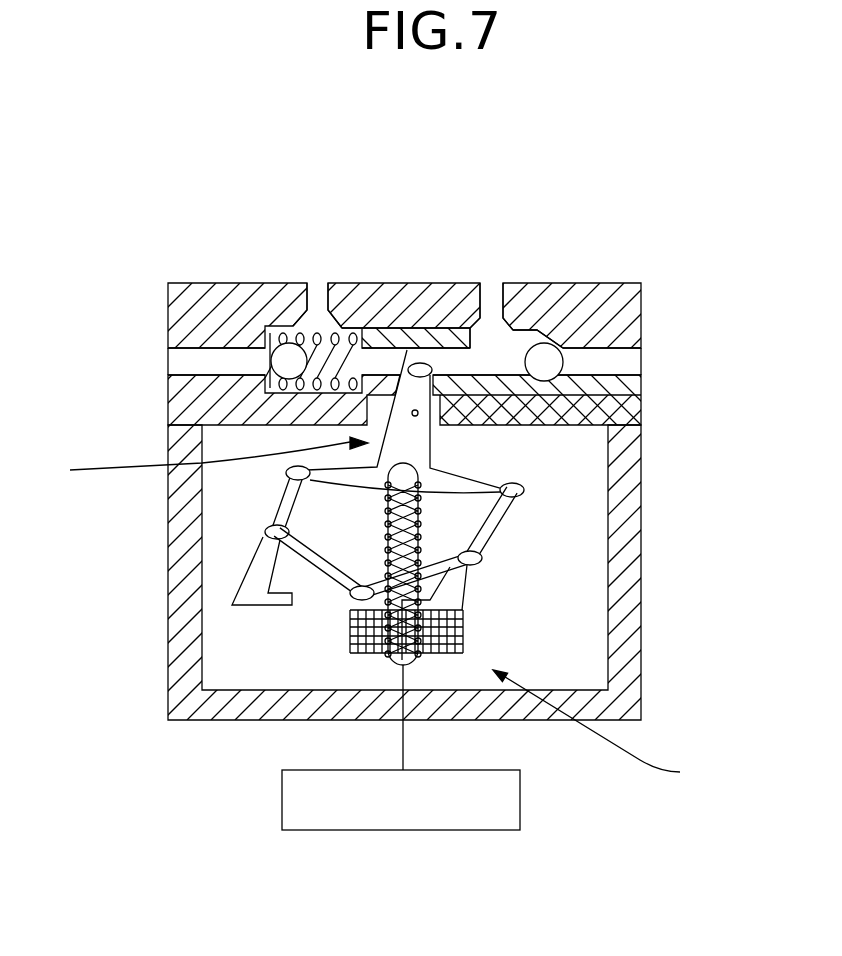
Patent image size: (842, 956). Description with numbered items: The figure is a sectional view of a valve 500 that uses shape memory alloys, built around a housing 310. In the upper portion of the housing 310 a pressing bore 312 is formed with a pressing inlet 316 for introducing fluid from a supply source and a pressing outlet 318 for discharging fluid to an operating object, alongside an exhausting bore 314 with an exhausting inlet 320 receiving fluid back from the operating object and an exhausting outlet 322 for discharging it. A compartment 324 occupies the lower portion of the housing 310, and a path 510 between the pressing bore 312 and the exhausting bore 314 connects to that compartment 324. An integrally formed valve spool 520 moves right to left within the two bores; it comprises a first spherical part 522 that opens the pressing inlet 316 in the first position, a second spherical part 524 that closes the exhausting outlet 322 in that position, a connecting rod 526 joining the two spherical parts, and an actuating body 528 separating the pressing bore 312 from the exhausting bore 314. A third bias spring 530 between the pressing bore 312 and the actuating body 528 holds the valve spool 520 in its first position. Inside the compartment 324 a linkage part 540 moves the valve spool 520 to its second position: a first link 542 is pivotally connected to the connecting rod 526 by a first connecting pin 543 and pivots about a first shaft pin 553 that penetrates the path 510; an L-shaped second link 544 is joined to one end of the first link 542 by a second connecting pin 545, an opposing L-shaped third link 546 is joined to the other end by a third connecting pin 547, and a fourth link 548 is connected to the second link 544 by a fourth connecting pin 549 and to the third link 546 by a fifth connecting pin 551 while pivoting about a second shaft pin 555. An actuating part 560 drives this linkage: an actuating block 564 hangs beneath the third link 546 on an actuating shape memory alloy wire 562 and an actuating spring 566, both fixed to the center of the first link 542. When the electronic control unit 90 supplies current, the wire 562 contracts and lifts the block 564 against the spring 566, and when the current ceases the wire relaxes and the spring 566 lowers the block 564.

The valve 500 is at (590, 188).
The housing 310 is at (642, 323).
The pressing bore 312 is at (304, 325).
The exhausting bore 314 is at (512, 330).
The pressing inlet 316 is at (308, 292).
The pressing outlet 318 is at (181, 358).
The exhausting inlet 320 is at (488, 300).
The exhausting outlet 322 is at (633, 365).
The compartment 324 is at (165, 714).
The path 510 is at (430, 345).
The valve spool 520 is at (371, 362).
The first spherical part 522 is at (255, 386).
The second spherical part 524 is at (553, 372).
The connecting rod 526 is at (530, 312).
The actuating body 528 is at (407, 350).
The third bias spring 530 is at (262, 370).
The linkage part 540 is at (186, 458).
The first link 542 is at (524, 496).
The first connecting pin 543 is at (413, 442).
The second link 544 is at (232, 603).
The second connecting pin 545 is at (287, 470).
The third link 546 is at (487, 530).
The third connecting pin 547 is at (503, 503).
The fourth link 548 is at (230, 678).
The fourth connecting pin 549 is at (265, 531).
The fifth connecting pin 551 is at (482, 562).
The first shaft pin 553 is at (412, 413).
The second shaft pin 555 is at (358, 594).
The actuating part 560 is at (613, 729).
The actuating shape memory alloy wire 562 is at (417, 662).
The actuating block 564 is at (463, 633).
The actuating spring 566 is at (340, 575).
The electronic control unit 90 is at (445, 832).